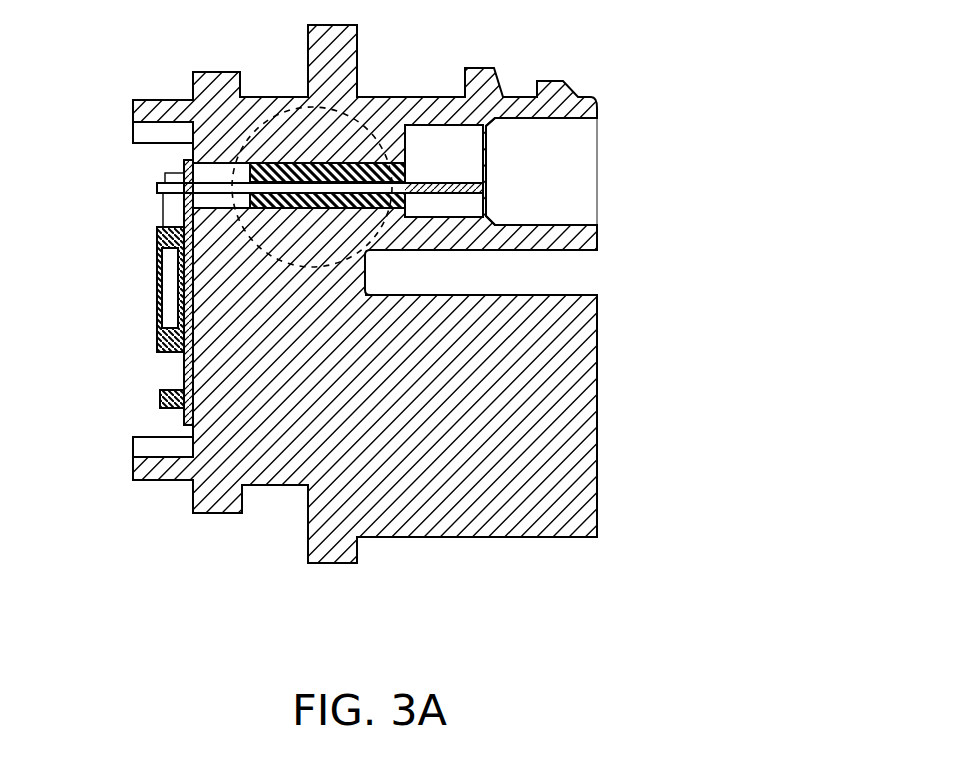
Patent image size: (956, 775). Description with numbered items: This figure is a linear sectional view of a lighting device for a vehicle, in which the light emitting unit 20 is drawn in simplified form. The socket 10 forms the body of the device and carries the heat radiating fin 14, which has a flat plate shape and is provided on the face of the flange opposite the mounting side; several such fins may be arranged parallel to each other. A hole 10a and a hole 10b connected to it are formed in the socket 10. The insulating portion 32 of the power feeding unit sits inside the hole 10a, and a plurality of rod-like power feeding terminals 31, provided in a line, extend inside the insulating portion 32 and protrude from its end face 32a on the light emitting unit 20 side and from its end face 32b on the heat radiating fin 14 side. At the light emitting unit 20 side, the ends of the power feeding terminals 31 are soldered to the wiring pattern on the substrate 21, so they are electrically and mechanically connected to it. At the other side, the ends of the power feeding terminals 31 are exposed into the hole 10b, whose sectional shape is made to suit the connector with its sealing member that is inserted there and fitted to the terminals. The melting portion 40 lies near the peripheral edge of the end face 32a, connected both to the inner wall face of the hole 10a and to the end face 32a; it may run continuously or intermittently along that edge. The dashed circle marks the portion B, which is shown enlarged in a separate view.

The socket 10 is at (440, 569).
The hole 10a is at (238, 173).
The hole 10b is at (568, 125).
The heat radiating fin 14 is at (488, 485).
The light emitting unit 20 is at (115, 252).
The substrate 21 is at (188, 296).
The power feeding terminal 31 is at (430, 183).
The insulating portion 32 is at (293, 177).
The end face 32a is at (238, 203).
The end face 32b is at (418, 208).
The melting portion 40 is at (238, 167).
The portion B is at (240, 165).